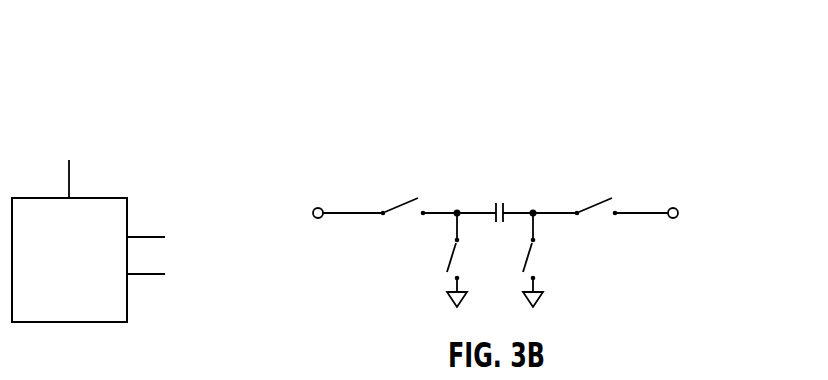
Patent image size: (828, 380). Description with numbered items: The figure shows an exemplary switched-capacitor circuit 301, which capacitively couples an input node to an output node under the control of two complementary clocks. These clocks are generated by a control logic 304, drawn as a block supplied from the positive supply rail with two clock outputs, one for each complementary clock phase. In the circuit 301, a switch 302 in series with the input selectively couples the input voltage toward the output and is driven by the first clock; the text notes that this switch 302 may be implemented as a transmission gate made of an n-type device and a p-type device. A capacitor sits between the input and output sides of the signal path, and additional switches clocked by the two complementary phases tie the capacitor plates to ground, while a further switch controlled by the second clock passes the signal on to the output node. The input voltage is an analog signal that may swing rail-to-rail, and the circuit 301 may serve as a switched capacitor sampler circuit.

The circuit 301 is at (192, 85).
The switch 302 is at (421, 201).
The control logic 304 is at (88, 308).